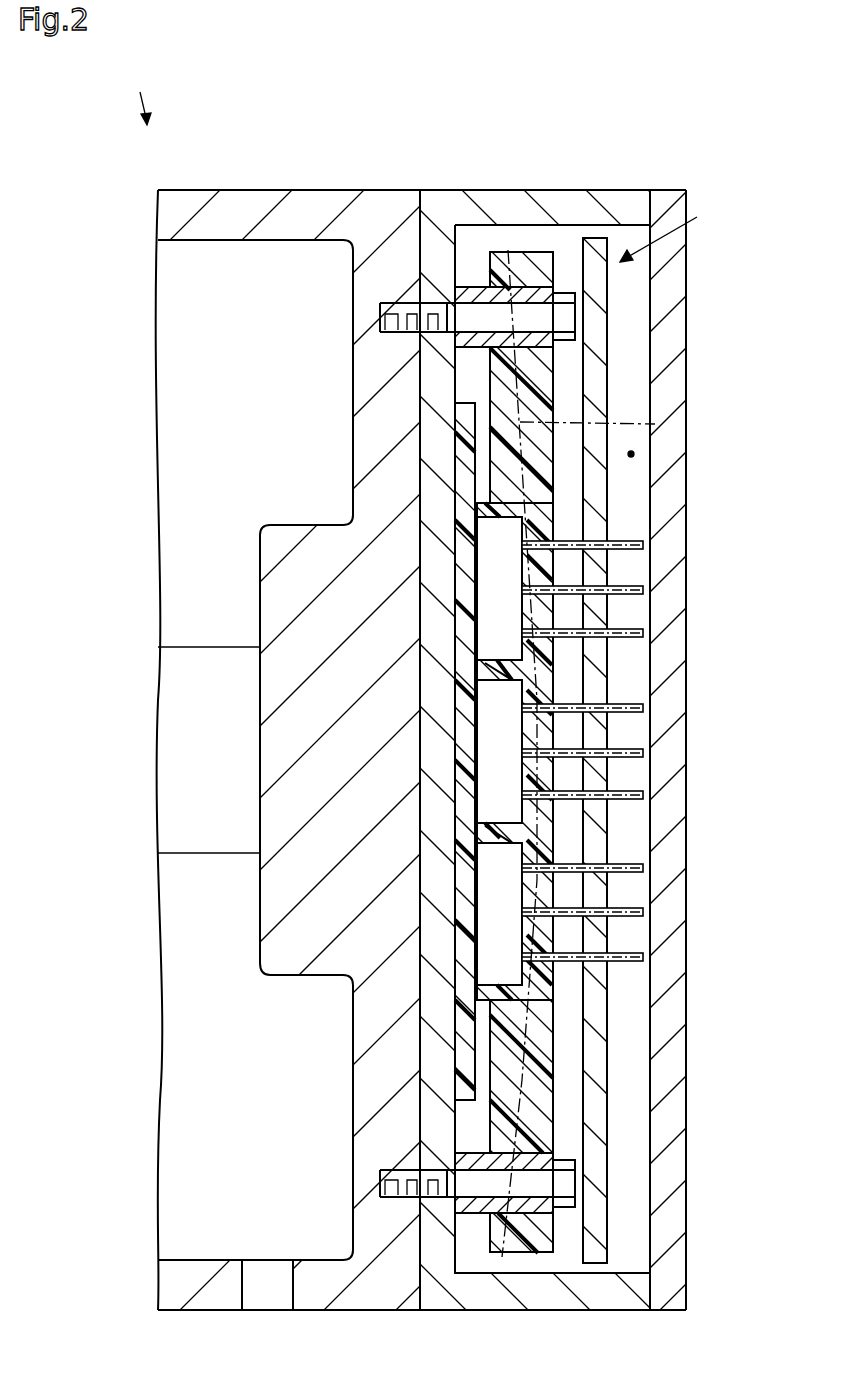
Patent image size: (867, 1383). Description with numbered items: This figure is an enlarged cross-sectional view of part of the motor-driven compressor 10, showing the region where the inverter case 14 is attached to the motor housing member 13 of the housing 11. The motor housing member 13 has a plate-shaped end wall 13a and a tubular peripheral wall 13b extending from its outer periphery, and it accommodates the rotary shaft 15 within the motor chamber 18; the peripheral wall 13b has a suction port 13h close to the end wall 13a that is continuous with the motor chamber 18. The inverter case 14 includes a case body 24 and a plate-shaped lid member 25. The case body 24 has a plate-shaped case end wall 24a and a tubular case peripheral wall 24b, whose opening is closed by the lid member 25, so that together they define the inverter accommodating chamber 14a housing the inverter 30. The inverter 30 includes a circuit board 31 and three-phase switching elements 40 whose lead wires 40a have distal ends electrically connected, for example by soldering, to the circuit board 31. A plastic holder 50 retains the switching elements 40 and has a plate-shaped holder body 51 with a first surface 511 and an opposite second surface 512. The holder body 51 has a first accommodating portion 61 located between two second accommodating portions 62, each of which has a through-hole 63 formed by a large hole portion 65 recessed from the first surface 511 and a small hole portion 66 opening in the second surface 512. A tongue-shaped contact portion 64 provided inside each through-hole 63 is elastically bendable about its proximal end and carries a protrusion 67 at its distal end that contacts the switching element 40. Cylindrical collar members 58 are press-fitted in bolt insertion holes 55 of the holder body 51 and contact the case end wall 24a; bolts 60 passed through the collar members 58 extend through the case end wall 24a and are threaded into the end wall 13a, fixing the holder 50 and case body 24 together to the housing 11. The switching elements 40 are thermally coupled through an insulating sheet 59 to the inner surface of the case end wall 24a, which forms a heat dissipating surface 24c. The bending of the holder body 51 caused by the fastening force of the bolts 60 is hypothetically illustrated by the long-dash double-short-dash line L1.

The motor-driven compressor 10 is at (136, 95).
The housing 11 is at (180, 190).
The motor housing member 13 is at (238, 190).
The end wall 13a is at (355, 320).
The peripheral wall 13b is at (302, 203).
The suction port 13h is at (247, 1266).
The inverter case 14 is at (633, 190).
The inverter accommodating chamber 14a is at (631, 454).
The rotary shaft 15 is at (190, 853).
The motor chamber 18 is at (190, 956).
The case body 24 is at (522, 1310).
The case end wall 24a is at (430, 485).
The case peripheral wall 24b is at (472, 1310).
The heat dissipating surface 24c is at (430, 600).
The lid member 25 is at (672, 1310).
The inverter 30 is at (678, 231).
The circuit board 31 is at (592, 482).
The switching element 40 is at (490, 537).
The lead wire 40a is at (643, 633).
The holder 50 is at (500, 250).
The holder body 51 is at (545, 262).
The first surface 511 is at (478, 393).
The second surface 512 is at (553, 385).
The bolt insertion hole 55 is at (530, 258).
The collar member 58 is at (480, 294).
The insulating sheet 59 is at (465, 1020).
The bolt 60 is at (565, 318).
The first accommodating portion 61 is at (490, 793).
The second accommodating portion 62 is at (490, 648).
The through-hole 63 is at (545, 510).
The contact portion 64 is at (535, 657).
The large hole portion 65 is at (535, 688).
The small hole portion 66 is at (535, 540).
The protrusion 67 is at (465, 577).
The long-dash double-short-dash line L1 is at (655, 424).